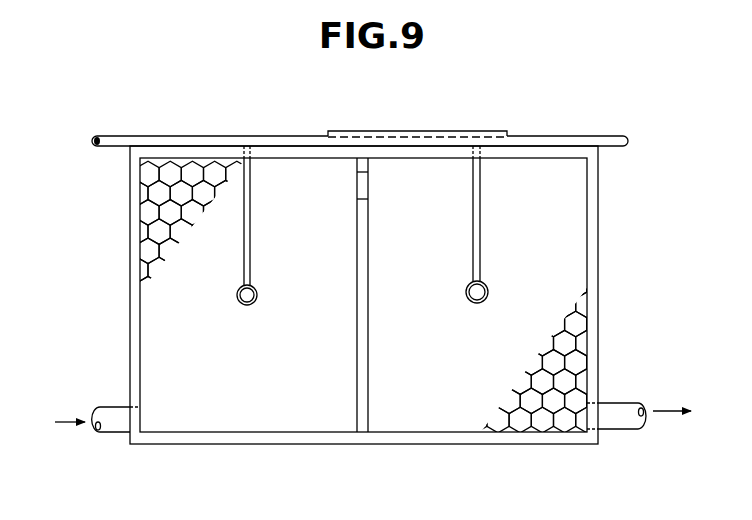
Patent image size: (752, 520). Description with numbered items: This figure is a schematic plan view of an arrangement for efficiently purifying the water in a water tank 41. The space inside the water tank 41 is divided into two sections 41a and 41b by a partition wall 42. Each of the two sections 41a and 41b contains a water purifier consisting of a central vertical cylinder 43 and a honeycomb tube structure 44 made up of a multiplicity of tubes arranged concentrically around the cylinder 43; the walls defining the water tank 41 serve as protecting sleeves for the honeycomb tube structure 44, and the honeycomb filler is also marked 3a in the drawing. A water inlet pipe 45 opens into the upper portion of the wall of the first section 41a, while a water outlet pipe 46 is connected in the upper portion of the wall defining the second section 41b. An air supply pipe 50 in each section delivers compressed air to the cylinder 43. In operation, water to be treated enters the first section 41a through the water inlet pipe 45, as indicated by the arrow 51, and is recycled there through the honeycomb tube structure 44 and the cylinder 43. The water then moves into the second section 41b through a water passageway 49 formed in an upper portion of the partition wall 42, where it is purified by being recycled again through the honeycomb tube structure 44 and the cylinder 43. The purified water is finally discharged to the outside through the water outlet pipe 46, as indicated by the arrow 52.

The honeycomb filler body 3a is at (575, 357).
The water tank 41 is at (514, 118).
The first section 41a is at (288, 182).
The second section 41b is at (450, 178).
The partition wall 42 is at (393, 294).
The central vertical cylinder 43 is at (237, 300).
The honeycomb tube structure 44 is at (157, 177).
The water inlet pipe 45 is at (120, 425).
The water outlet pipe 46 is at (620, 418).
The water passageway 49 is at (362, 183).
The air supply pipe 50 is at (243, 240).
The arrow 51 is at (68, 422).
The arrow 52 is at (663, 410).